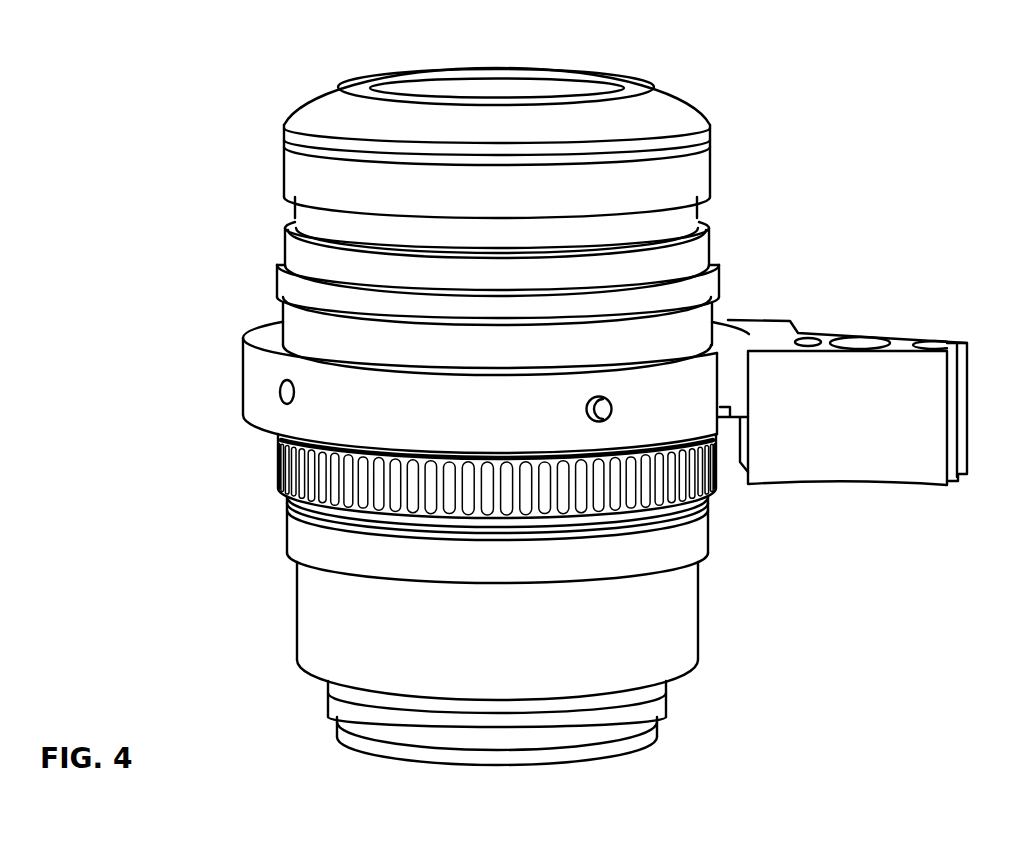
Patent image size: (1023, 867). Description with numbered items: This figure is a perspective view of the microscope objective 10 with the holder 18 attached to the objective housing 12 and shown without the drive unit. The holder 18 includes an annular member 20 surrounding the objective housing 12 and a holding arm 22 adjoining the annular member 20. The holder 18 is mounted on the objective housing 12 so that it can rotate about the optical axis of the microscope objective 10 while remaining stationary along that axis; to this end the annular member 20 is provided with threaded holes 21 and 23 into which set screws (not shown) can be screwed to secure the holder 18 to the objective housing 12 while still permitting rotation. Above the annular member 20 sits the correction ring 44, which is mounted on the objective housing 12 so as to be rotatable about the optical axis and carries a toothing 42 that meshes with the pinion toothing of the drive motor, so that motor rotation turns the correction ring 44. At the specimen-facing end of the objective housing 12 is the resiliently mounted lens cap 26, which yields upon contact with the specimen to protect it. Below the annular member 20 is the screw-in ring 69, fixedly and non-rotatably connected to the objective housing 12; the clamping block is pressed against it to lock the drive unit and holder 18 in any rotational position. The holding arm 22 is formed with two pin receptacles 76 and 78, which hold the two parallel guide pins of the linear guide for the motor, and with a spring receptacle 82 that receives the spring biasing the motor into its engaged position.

The microscope objective 10 is at (204, 90).
The objective housing 12 is at (300, 598).
The holder 18 is at (848, 214).
The annular member 20 is at (243, 372).
The threaded hole 21 is at (294, 393).
The holding arm 22 is at (863, 468).
The threaded hole 23 is at (588, 409).
The lens cap 26 is at (637, 83).
The toothing 42 is at (276, 290).
The correction ring 44 is at (283, 263).
The screw-in ring 69 is at (277, 452).
The pin receptacle 76 is at (810, 339).
The pin receptacle 78 is at (954, 342).
The spring receptacle 82 is at (862, 340).